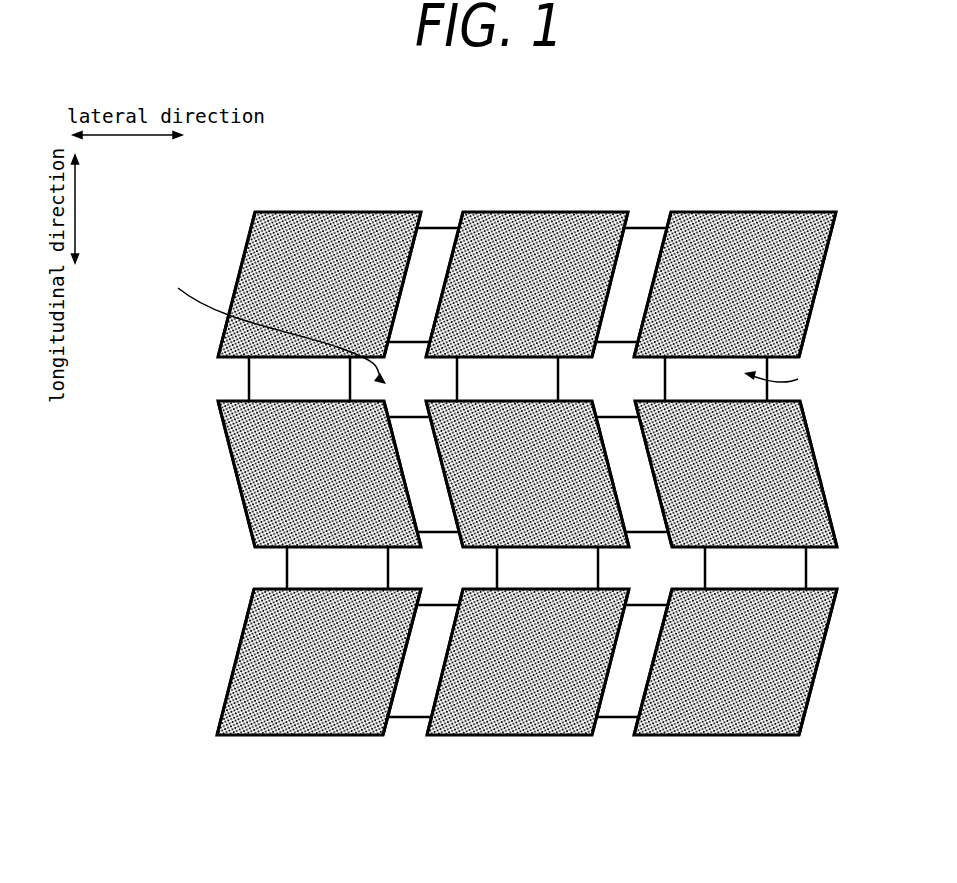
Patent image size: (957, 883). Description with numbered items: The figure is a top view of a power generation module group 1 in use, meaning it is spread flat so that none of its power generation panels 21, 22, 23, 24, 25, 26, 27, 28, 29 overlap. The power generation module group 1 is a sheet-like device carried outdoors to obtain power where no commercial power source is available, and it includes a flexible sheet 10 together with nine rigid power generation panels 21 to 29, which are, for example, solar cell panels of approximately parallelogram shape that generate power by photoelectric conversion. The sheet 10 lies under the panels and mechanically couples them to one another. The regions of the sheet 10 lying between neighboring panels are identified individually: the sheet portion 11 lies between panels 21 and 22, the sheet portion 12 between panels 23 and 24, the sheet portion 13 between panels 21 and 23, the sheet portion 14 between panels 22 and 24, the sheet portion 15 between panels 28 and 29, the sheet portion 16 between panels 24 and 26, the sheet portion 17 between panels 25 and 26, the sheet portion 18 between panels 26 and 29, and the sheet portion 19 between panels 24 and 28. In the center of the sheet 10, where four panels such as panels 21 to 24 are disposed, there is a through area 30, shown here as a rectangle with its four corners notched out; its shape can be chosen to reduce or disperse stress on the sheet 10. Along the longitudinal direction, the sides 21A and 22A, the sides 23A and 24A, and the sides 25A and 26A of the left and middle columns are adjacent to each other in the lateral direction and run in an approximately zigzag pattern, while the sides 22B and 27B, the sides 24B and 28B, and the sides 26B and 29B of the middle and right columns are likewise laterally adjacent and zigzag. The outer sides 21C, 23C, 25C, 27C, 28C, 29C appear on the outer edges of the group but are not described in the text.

The power generation module group 1 is at (837, 117).
The sheet 10 is at (783, 379).
The sheet portion 11 is at (437, 228).
The sheet portion 12 is at (432, 520).
The sheet portion 13 is at (264, 378).
The sheet portion 14 is at (470, 378).
The sheet portion 15 is at (790, 569).
The sheet portion 16 is at (503, 569).
The sheet portion 17 is at (410, 708).
The sheet portion 18 is at (617, 708).
The sheet portion 19 is at (650, 520).
The power generation panel 21 is at (330, 222).
The side 21A is at (404, 278).
The outer side surface of cell 21 21C is at (245, 252).
The power generation panel 22 is at (539, 222).
The side 22A is at (445, 278).
The side 22B is at (611, 278).
The power generation panel 23 is at (248, 431).
The side 23A is at (403, 475).
The outer side surface of cell 23 23C is at (237, 475).
The power generation panel 24 is at (562, 414).
The side 24A is at (445, 475).
The side 24B is at (611, 475).
The power generation panel 25 is at (302, 725).
The side 25A is at (404, 657).
The outer side surface of cell 25 25C is at (237, 657).
The power generation panel 26 is at (510, 725).
The side 26A is at (445, 657).
The side 26B is at (611, 657).
The power generation panel 27 is at (750, 222).
The side 27B is at (655, 278).
The outer side surface of cell 27 27C is at (821, 278).
The power generation panel 28 is at (798, 430).
The side 28B is at (654, 475).
The outer side surface of cell 28 28C is at (819, 475).
The power generation panel 29 is at (717, 725).
The side 29B is at (655, 657).
The outer side surface of cell 29 29C is at (821, 657).
The through area 30 is at (269, 328).